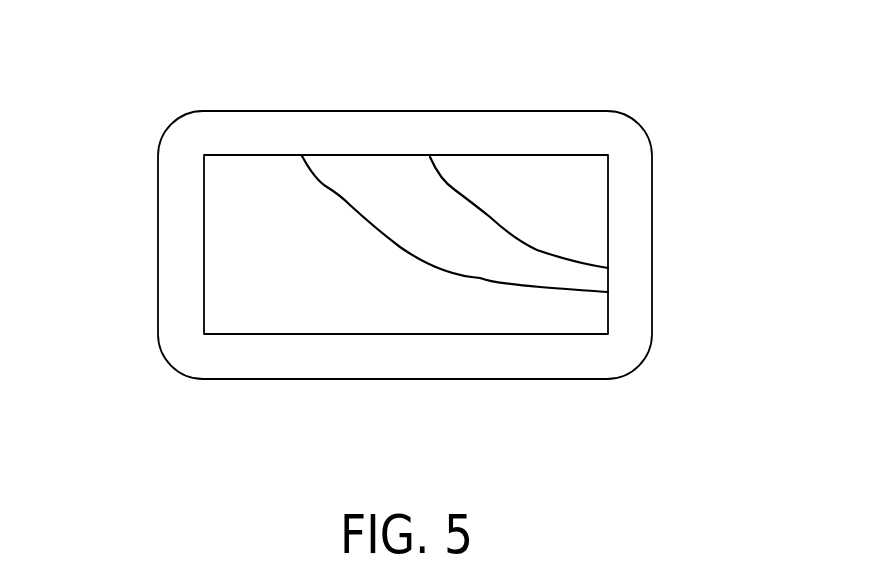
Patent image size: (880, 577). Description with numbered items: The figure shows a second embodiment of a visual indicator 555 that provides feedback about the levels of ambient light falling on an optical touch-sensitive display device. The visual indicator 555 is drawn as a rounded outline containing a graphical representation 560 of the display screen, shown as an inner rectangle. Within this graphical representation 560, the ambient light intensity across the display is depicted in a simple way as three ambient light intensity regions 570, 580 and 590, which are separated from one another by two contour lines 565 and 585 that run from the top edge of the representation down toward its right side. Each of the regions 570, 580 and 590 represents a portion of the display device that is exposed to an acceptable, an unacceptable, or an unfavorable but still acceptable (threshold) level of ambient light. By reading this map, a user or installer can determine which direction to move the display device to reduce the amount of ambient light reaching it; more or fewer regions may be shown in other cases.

The visual indicator 555 is at (157, 155).
The graphical representation 560 is at (203, 292).
The contour line 565 is at (327, 187).
The ambient light intensity region 570 is at (339, 290).
The ambient light intensity region 580 is at (378, 180).
The contour line 585 is at (492, 218).
The ambient light intensity region 590 is at (562, 189).